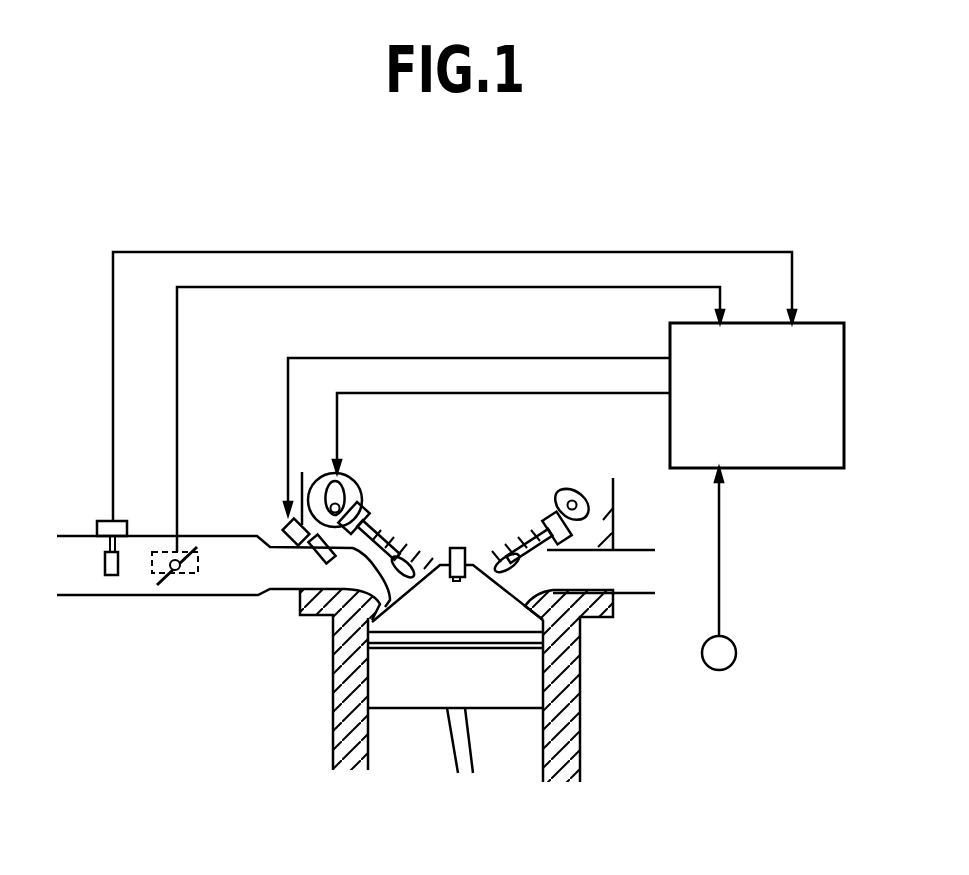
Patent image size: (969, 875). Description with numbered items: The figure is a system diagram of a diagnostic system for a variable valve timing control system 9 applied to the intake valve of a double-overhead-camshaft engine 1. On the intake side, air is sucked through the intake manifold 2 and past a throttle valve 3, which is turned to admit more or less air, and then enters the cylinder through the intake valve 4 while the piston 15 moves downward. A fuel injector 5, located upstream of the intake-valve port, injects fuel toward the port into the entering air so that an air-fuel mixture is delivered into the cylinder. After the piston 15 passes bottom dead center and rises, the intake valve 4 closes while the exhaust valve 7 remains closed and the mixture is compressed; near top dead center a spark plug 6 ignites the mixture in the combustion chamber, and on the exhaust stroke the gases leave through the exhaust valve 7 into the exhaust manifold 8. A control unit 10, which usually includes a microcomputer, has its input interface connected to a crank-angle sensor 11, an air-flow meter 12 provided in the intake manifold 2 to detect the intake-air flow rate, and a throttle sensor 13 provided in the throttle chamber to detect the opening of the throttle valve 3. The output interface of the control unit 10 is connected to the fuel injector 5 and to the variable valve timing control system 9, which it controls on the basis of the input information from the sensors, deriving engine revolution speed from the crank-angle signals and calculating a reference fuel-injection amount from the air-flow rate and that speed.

The engine 1 is at (590, 684).
The intake manifold 2 is at (73, 536).
The throttle valve 3 is at (172, 575).
The intake valve 4 is at (403, 557).
The fuel injector 5 is at (283, 522).
The spark plug 6 is at (455, 548).
The exhaust valve 7 is at (505, 557).
The exhaust manifold 8 is at (643, 548).
The variable valve timing control system 9 is at (355, 475).
The control unit 10 is at (822, 323).
The crank-angle sensor 11 is at (730, 668).
The air-flow meter 12 is at (122, 520).
The throttle sensor 13 is at (182, 545).
The piston 15 is at (400, 667).